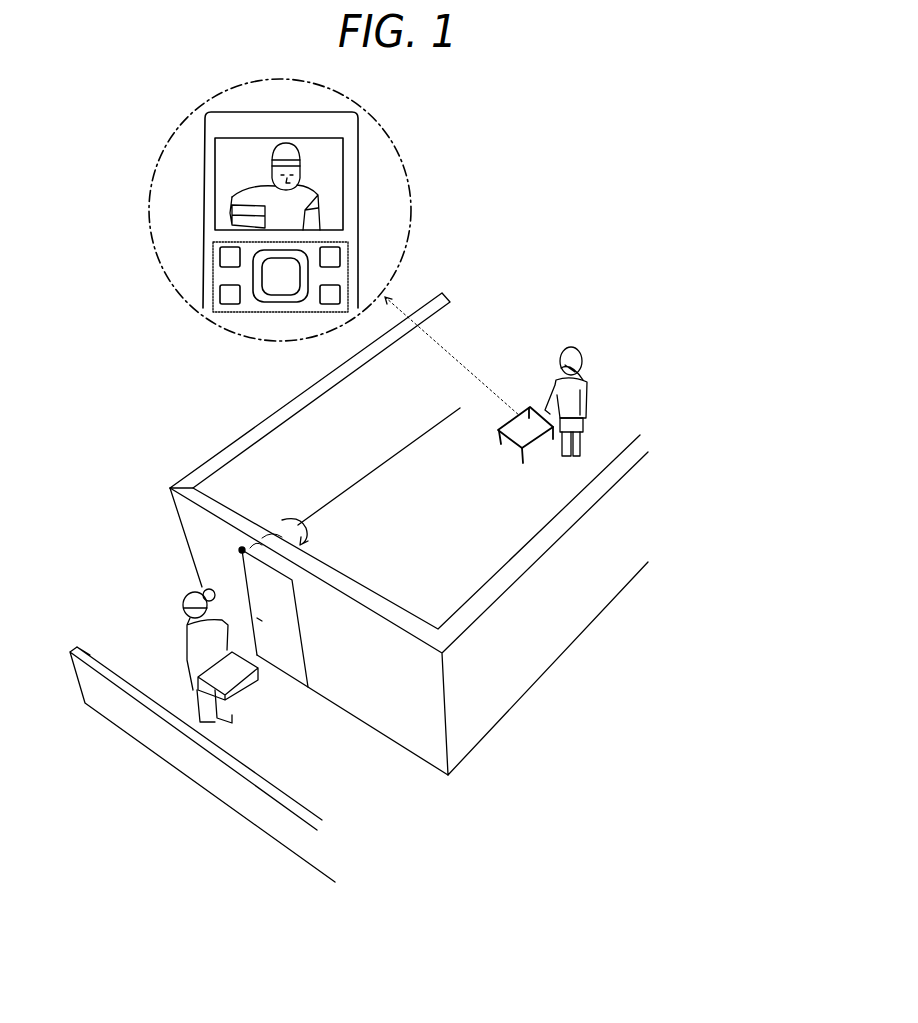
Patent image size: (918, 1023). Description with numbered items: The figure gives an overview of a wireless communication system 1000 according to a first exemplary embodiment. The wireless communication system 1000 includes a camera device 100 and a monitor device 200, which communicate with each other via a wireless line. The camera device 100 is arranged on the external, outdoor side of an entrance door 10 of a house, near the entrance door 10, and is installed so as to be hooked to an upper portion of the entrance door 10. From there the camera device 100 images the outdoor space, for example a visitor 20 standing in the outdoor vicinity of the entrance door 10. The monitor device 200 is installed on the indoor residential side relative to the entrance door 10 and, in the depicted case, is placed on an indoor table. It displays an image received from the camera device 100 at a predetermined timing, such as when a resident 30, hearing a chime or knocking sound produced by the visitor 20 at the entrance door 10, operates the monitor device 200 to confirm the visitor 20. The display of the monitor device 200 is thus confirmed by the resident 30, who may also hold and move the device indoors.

The wireless communication system 1000 is at (577, 209).
The camera device 100 is at (242, 550).
The entrance door 10 is at (290, 640).
The visitor 20 is at (200, 640).
The resident 30 is at (590, 395).
The monitor device 200 is at (522, 438).